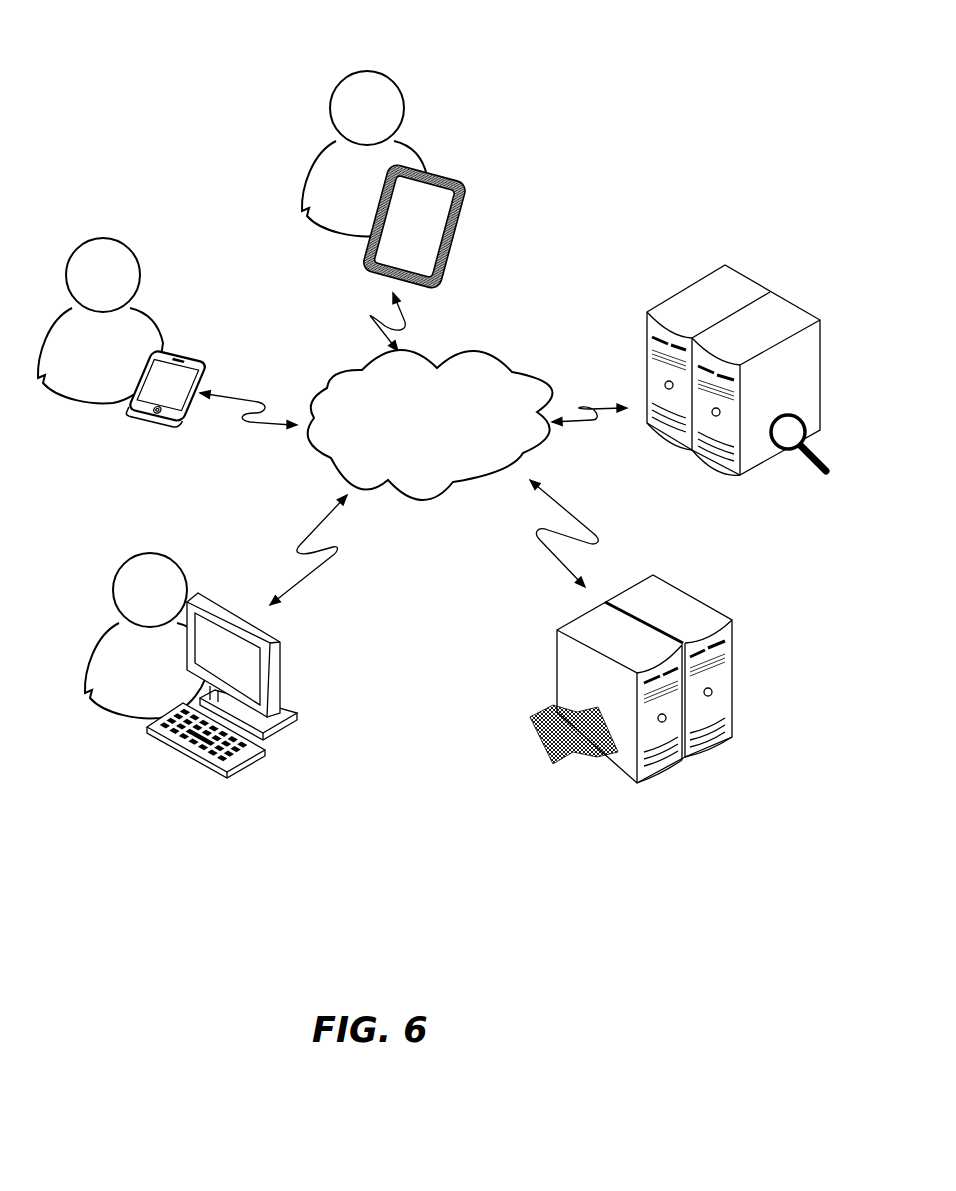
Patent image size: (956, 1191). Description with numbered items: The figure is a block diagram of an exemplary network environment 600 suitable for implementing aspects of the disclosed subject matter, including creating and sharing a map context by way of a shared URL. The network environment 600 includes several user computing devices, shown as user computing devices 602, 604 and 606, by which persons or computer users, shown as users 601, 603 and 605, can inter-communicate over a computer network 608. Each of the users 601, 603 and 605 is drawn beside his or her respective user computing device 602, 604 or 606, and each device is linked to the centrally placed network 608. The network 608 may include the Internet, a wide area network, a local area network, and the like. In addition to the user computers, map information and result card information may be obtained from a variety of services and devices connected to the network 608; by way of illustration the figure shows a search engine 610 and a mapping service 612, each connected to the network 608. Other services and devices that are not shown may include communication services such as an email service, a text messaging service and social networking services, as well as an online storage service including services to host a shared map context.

The network environment 600 is at (642, 138).
The user 601 is at (85, 242).
The user computing device 602 is at (177, 347).
The user 603 is at (352, 76).
The user computing device 604 is at (462, 176).
The user 605 is at (130, 549).
The user computing device 606 is at (292, 700).
The network 608 is at (430, 425).
The search engine 610 is at (763, 290).
The mapping service 612 is at (707, 758).